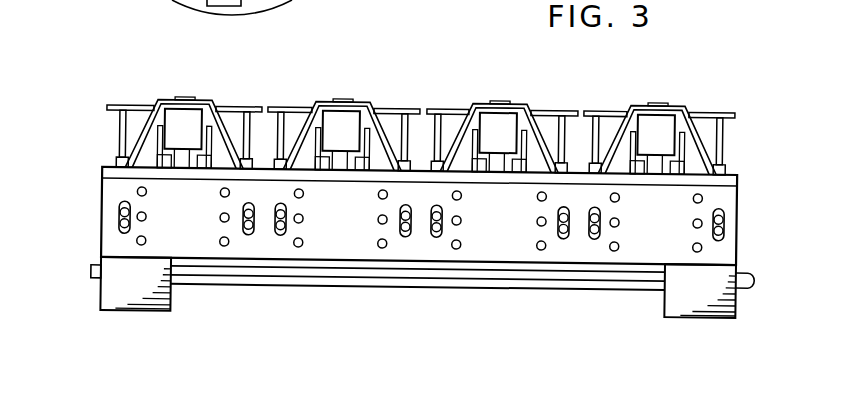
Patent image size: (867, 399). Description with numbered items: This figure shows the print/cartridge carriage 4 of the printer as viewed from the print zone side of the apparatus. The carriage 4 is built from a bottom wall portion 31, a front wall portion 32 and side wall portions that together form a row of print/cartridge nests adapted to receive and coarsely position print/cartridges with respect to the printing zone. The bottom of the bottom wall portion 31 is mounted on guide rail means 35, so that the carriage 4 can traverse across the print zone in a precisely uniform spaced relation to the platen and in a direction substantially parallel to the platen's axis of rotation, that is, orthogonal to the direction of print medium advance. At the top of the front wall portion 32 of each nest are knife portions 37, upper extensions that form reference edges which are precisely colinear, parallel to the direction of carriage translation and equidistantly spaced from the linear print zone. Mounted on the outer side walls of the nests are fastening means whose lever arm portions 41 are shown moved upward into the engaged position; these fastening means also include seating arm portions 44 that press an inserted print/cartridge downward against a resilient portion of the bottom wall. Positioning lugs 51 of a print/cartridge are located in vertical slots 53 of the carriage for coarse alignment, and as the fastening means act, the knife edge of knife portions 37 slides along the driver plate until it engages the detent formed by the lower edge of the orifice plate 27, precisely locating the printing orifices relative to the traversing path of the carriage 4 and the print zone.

The print/cartridge carriage 4 is at (130, 86).
The orifice plate 27 is at (183, 125).
The bottom wall portion 31 is at (192, 258).
The front wall portion 32 is at (327, 238).
The guide rail means 35 is at (487, 290).
The knife portions 37 is at (182, 160).
The lever arm portions 41 is at (121, 131).
The seating arm portions 44 is at (120, 163).
The positioning lugs 51 is at (121, 217).
The vertical slots 53 is at (121, 229).